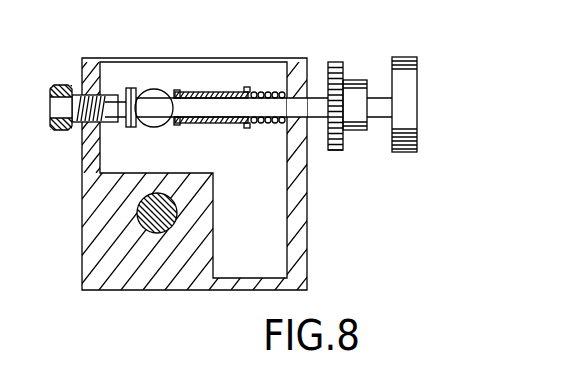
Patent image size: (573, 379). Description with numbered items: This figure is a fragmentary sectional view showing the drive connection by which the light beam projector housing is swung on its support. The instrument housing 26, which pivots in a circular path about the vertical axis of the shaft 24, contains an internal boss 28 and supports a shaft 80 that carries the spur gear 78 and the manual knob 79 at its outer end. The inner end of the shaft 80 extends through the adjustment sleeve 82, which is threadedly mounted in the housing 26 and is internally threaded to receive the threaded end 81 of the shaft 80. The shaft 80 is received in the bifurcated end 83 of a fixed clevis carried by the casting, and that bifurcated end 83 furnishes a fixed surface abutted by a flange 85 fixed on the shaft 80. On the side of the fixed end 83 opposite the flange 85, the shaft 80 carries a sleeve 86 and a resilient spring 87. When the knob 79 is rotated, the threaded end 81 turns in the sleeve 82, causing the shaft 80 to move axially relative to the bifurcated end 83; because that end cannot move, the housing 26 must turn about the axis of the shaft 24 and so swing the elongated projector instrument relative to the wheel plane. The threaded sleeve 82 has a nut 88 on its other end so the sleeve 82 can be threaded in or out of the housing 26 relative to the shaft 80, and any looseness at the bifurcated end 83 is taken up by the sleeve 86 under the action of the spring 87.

The vertical shaft 24 is at (138, 212).
The instrument housing 26 is at (80, 270).
The internal boss 28 is at (168, 263).
The spur gear 78 is at (333, 150).
The manual knob 79 is at (408, 57).
The shaft 80 is at (313, 117).
The threaded end 81 is at (88, 120).
The adjustment sleeve 82 is at (116, 93).
The bifurcated end 83 is at (172, 88).
The flange 85 is at (130, 128).
The sleeve 86 is at (233, 90).
The resilient spring 87 is at (280, 90).
The nut 88 is at (65, 84).